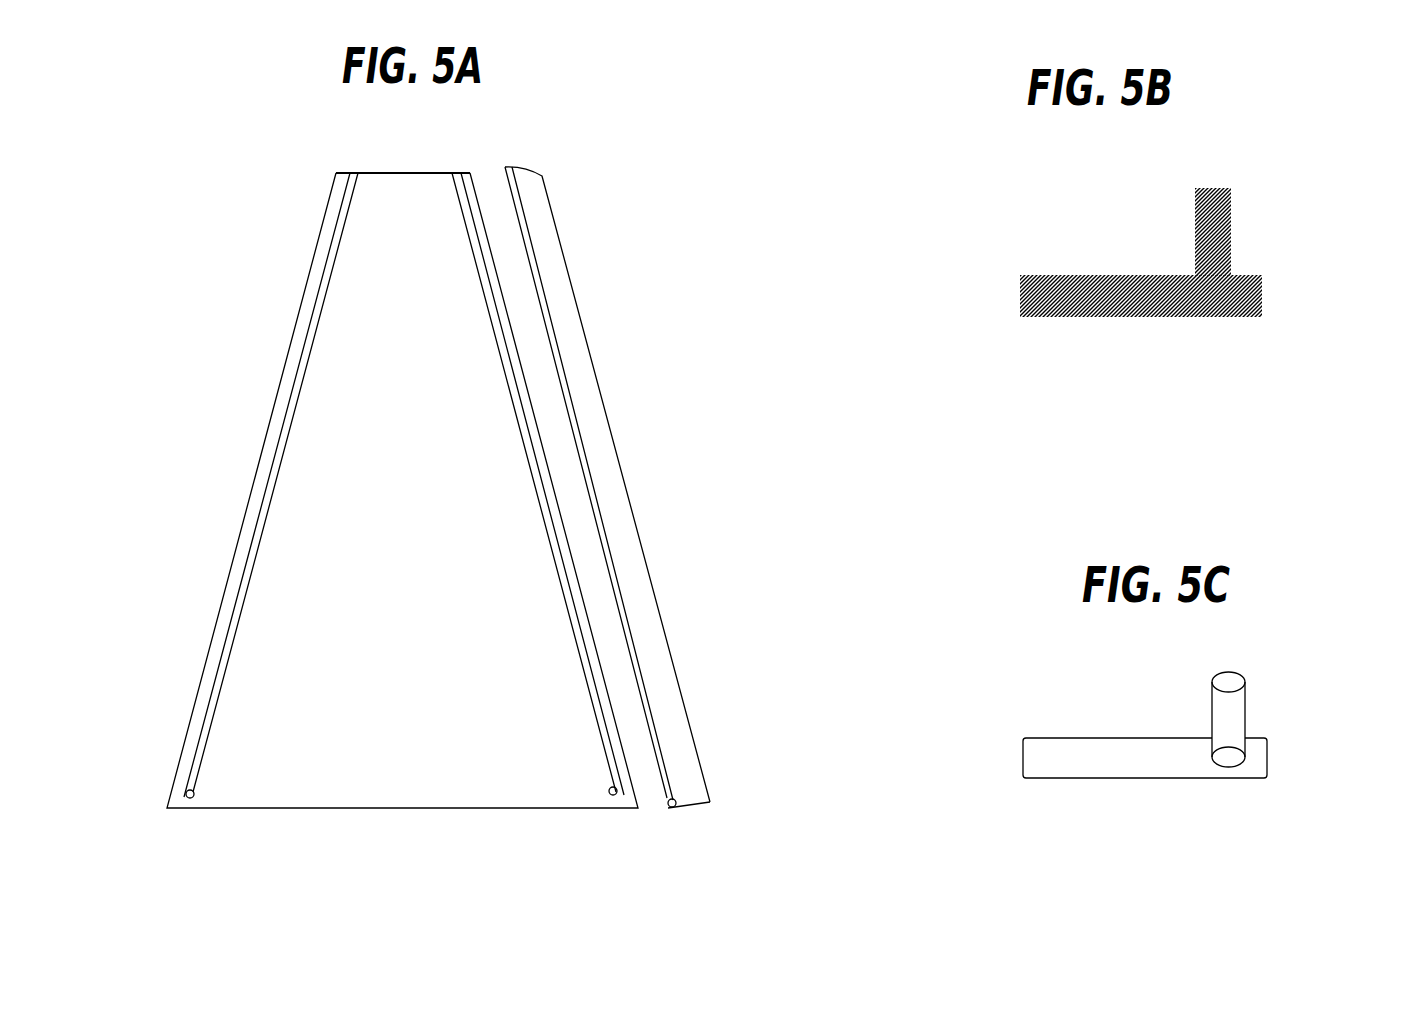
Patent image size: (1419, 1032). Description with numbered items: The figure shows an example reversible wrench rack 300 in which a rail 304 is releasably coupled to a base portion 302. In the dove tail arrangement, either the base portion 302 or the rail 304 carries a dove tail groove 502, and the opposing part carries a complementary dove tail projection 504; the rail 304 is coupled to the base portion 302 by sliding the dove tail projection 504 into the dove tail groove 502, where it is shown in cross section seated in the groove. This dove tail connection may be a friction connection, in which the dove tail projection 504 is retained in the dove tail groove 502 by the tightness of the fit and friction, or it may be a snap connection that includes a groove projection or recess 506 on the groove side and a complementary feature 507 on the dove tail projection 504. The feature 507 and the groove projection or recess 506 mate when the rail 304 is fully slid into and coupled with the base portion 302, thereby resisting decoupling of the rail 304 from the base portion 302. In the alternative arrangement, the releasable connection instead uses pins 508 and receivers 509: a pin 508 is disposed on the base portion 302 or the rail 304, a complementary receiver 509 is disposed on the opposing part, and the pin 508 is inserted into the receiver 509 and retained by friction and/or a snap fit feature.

In FIG. 5A, the wrench rack 300 is at (512, 535).
In FIG. 5A, the base portion 302 is at (402, 538).
In FIG. 5A, the rail 304 is at (643, 524).
In FIG. 5A, the dove tail groove 502 is at (548, 522).
In FIG. 5B, the dove tail groove 502 is at (1246, 300).
In FIG. 5A, the dove tail projection 504 is at (580, 437).
In FIG. 5B, the dove tail projection 504 is at (1230, 278).
In FIG. 5A, the groove projection or recess 506 is at (196, 796).
In FIG. 5A, the complementary feature 507 is at (677, 806).
In FIG. 5C, the pin 508 is at (1232, 703).
In FIG. 5C, the receiver 509 is at (1250, 765).